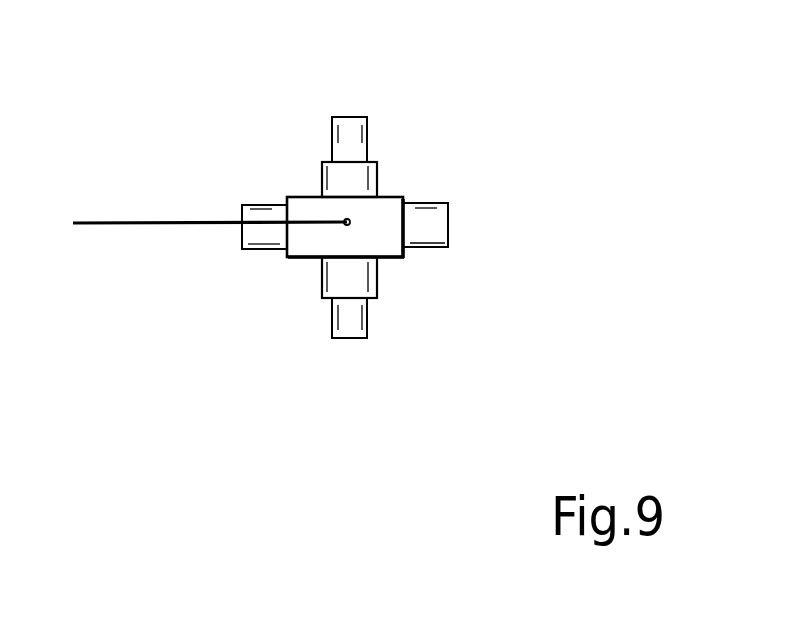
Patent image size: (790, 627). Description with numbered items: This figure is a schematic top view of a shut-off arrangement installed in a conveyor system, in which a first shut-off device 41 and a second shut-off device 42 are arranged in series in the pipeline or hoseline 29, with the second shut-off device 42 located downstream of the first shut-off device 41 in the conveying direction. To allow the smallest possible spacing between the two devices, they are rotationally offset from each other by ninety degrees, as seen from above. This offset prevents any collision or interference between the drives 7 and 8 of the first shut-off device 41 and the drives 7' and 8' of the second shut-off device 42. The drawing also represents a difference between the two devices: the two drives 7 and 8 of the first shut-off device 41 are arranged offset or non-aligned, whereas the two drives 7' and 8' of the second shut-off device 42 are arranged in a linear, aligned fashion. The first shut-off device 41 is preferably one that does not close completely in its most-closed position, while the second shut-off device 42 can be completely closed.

The drive 7 is at (230, 300).
The drive 7' is at (425, 99).
The drive 8 is at (487, 216).
The drive 8' is at (434, 342).
The pipeline or hoseline 29 is at (170, 225).
The first shut-off device 41 is at (436, 190).
The second shut-off device 42 is at (312, 175).